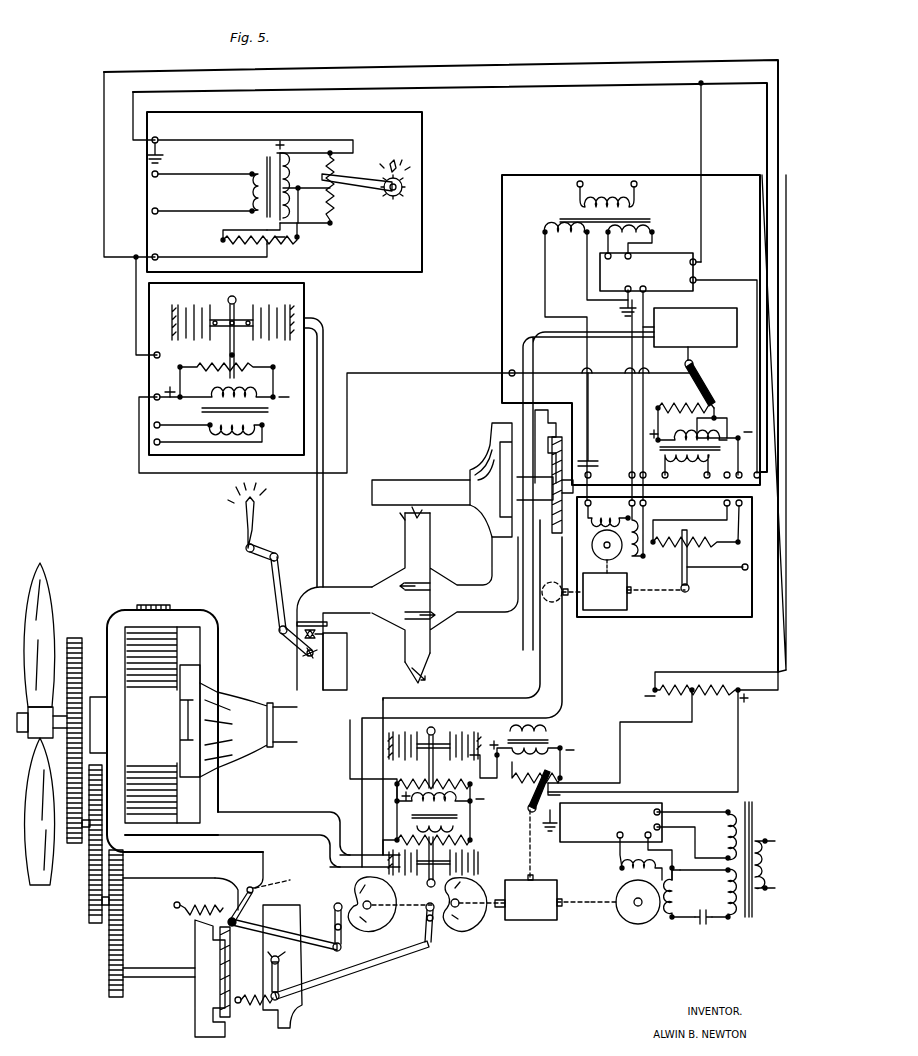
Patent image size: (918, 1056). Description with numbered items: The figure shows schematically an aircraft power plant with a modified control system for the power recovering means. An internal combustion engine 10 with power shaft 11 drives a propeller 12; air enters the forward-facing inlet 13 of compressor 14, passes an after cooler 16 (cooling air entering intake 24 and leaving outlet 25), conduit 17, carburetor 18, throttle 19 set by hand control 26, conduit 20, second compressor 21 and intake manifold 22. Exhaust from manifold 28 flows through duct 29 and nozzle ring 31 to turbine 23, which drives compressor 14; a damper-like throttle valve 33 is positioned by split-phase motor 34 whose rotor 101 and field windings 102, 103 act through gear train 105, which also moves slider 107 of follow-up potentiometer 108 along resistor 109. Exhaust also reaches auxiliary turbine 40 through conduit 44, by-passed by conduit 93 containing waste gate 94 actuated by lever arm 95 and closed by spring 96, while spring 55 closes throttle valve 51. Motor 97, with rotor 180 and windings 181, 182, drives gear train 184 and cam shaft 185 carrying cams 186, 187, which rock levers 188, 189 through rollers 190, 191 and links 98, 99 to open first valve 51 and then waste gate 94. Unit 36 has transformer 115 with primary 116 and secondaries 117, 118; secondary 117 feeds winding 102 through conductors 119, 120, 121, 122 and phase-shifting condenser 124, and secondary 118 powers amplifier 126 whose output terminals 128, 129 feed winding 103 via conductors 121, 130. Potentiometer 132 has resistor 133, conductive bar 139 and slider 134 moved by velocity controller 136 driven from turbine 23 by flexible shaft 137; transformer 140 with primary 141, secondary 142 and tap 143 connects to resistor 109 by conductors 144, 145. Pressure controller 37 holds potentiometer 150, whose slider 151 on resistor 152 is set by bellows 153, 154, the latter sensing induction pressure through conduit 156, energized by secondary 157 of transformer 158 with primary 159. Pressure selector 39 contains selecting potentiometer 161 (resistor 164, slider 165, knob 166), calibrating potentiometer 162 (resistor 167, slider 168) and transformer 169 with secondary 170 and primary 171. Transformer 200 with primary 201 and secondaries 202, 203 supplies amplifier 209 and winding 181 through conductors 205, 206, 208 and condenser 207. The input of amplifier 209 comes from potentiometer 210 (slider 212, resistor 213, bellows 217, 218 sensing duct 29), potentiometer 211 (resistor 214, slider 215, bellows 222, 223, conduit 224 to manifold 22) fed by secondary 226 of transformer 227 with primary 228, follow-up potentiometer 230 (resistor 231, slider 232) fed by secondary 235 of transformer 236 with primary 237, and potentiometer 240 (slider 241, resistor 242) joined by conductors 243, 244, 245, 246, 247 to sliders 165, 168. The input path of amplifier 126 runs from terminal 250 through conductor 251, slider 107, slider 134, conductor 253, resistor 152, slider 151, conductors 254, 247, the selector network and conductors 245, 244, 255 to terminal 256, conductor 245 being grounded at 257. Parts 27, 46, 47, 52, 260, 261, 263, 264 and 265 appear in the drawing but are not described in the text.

The internal combustion engine 10 is at (155, 713).
The power shaft 11 is at (57, 700).
The propeller 12 is at (42, 593).
The intake 13 is at (372, 503).
The compressor 14 is at (480, 473).
The after cooler 16 is at (448, 588).
The conduit 17 is at (342, 592).
The carburetor 18 is at (347, 657).
The throttle 19 is at (297, 653).
The conduit 20 is at (300, 742).
The second compressor 21 is at (235, 693).
The intake manifold system 22 is at (234, 632).
The gas turbine 23 is at (566, 445).
The intake 24 is at (407, 548).
The outlet 25 is at (430, 675).
The hand control 26 is at (258, 527).
The impeller 27 is at (183, 738).
The exhaust manifold 28 is at (165, 865).
The exhaust conduit 29 is at (562, 663).
The nozzle ring 31 is at (540, 405).
The throttle valve 33 is at (547, 603).
The motor 34 is at (680, 620).
The network and amplifier unit 36 is at (540, 165).
The pressure responsive controller 37 is at (149, 378).
The pressure selector 39 is at (422, 136).
The auxiliary turbine 40 is at (188, 997).
The conduit 44 is at (215, 882).
The gear 46 is at (78, 903).
The gear 47 is at (85, 680).
The throttle valve 51 is at (269, 897).
The link 52 is at (280, 928).
The spring 55 is at (186, 920).
The by-pass conduit 93 is at (292, 910).
The waste gate 94 is at (285, 962).
The lever arm 95 is at (270, 977).
The spring 96 is at (248, 1012).
The motor 97 is at (524, 933).
The link 98 is at (243, 930).
The link 99 is at (380, 968).
The rotor 101 is at (612, 552).
The field winding 102 is at (606, 506).
The field winding 103 is at (650, 540).
The gear train 105 is at (627, 603).
The slider 107 is at (690, 590).
The follow up potentiometer 108 is at (706, 559).
The resistor 109 is at (670, 532).
The transformer 115 is at (544, 219).
The primary winding 116 is at (596, 200).
The secondary winding 117 is at (570, 240).
The secondary winding 118 is at (655, 235).
The conductor 119 is at (590, 353).
The conductor 120 is at (592, 472).
The conductor 121 is at (630, 402).
The conductor 122 is at (586, 272).
The condenser 124 is at (596, 466).
The amplifier 126 is at (670, 257).
The output terminal 128 is at (624, 289).
The output terminal 129 is at (648, 292).
The conductor 130 is at (645, 385).
The potentiometer 132 is at (723, 403).
The resistor 133 is at (690, 398).
The slider 134 is at (700, 367).
The velocity controller 136 is at (710, 308).
The flexible drive shaft 137 is at (523, 320).
The conductive bar 139 is at (740, 404).
The transformer 140 is at (748, 443).
The primary winding 141 is at (688, 460).
The secondary winding 142 is at (665, 436).
The intermediate tap 143 is at (690, 437).
The conductor 144 is at (740, 540).
The conductor 145 is at (727, 514).
The potentiometer 150 is at (248, 355).
The slider 151 is at (228, 353).
The resistor 152 is at (244, 373).
The bellows member 153 is at (200, 292).
The bellows member 154 is at (268, 300).
The conduit 156 is at (323, 345).
The secondary 157 is at (218, 393).
The transformer 158 is at (268, 420).
The primary winding 159 is at (222, 430).
The potentiometer 161 is at (342, 197).
The potentiometer 162 is at (288, 253).
The resistor 164 is at (326, 150).
The slider 165 is at (362, 175).
The knob 166 is at (403, 190).
The resistor 167 is at (226, 240).
The slider 168 is at (262, 250).
The transformer 169 is at (266, 145).
The secondary winding 170 is at (289, 168).
The primary winding 171 is at (252, 190).
The rotor 180 is at (630, 912).
The field winding 181 is at (700, 905).
The field winding 182 is at (618, 865).
The gear train 184 is at (540, 920).
The cam shaft 185 is at (495, 912).
The cam 186 is at (478, 925).
The cam 187 is at (400, 925).
The lever 188 is at (435, 945).
The lever 189 is at (340, 952).
The cam follower roller 190 is at (425, 905).
The roller 191 is at (338, 903).
The transformer 200 is at (768, 896).
The primary winding 201 is at (772, 830).
The secondary winding 202 is at (724, 828).
The secondary winding 203 is at (722, 920).
The conductor 205 is at (680, 888).
The conductor 206 is at (708, 910).
The condenser 207 is at (703, 926).
The conductor 208 is at (676, 918).
The amplifier 209 is at (638, 803).
The potentiometer 210 is at (461, 795).
The potentiometer 211 is at (458, 826).
The slider 212 is at (428, 770).
The resistor 213 is at (348, 780).
The resistor 214 is at (472, 840).
The slider 215 is at (380, 845).
The bellows 217 is at (404, 728).
The bellows 218 is at (462, 728).
The bellows 222 is at (410, 878).
The bellows 223 is at (480, 862).
The conduit 224 is at (454, 803).
The secondary 226 is at (420, 800).
The transformer 227 is at (480, 820).
The primary winding 228 is at (460, 810).
The follow up potentiometer 230 is at (565, 764).
The resistor 231 is at (522, 762).
The slider 232 is at (527, 804).
The secondary 235 is at (565, 748).
The transformer 236 is at (561, 739).
The primary winding 237 is at (548, 727).
The potentiometer 240 is at (705, 702).
The slider 241 is at (690, 693).
The resistor 242 is at (745, 675).
The conductor 243 is at (776, 638).
The conductor 244 is at (600, 92).
The conductor 245 is at (172, 140).
The conductor 246 is at (700, 672).
The conductor 247 is at (187, 258).
The lower input terminal 250 is at (698, 281).
The conductor 251 is at (760, 268).
The conductor 253 is at (558, 366).
The conductor 254 is at (139, 340).
The conductor 255 is at (701, 125).
The upper input terminal 256 is at (700, 255).
The ground 257 is at (165, 158).
The conductor 260 is at (620, 850).
The conductor 261 is at (533, 860).
The conductor 263 is at (562, 784).
The conductor 264 is at (738, 760).
The terminal 265 is at (575, 807).